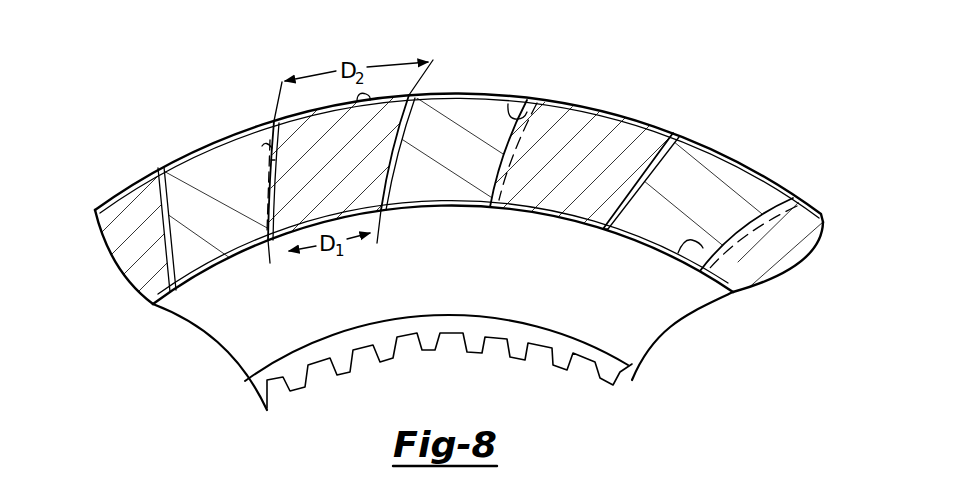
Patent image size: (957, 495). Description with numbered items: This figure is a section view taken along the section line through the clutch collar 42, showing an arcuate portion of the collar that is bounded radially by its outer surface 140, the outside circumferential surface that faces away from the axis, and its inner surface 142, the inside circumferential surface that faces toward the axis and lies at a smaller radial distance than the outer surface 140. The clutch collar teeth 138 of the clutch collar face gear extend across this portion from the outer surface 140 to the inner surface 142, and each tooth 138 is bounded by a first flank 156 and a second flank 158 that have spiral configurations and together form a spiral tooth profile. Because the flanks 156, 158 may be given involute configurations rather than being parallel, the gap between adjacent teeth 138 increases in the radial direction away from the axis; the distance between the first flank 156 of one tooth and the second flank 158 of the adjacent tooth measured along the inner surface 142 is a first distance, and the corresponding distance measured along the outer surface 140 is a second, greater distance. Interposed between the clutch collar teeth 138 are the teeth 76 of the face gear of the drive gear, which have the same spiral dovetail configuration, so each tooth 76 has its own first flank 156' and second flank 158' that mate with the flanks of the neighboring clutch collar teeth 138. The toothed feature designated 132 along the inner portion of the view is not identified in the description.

The clutch collar 42 is at (160, 167).
The outer surface 140 is at (128, 186).
The inner surface 142 is at (205, 274).
The clutch collar teeth 138 is at (357, 100).
The teeth 76 is at (220, 232).
The first flank 156 is at (430, 154).
The first flank 156' is at (429, 187).
The second flank 158 is at (587, 194).
The second flank 158' is at (301, 154).
The gear teeth 132 is at (393, 360).